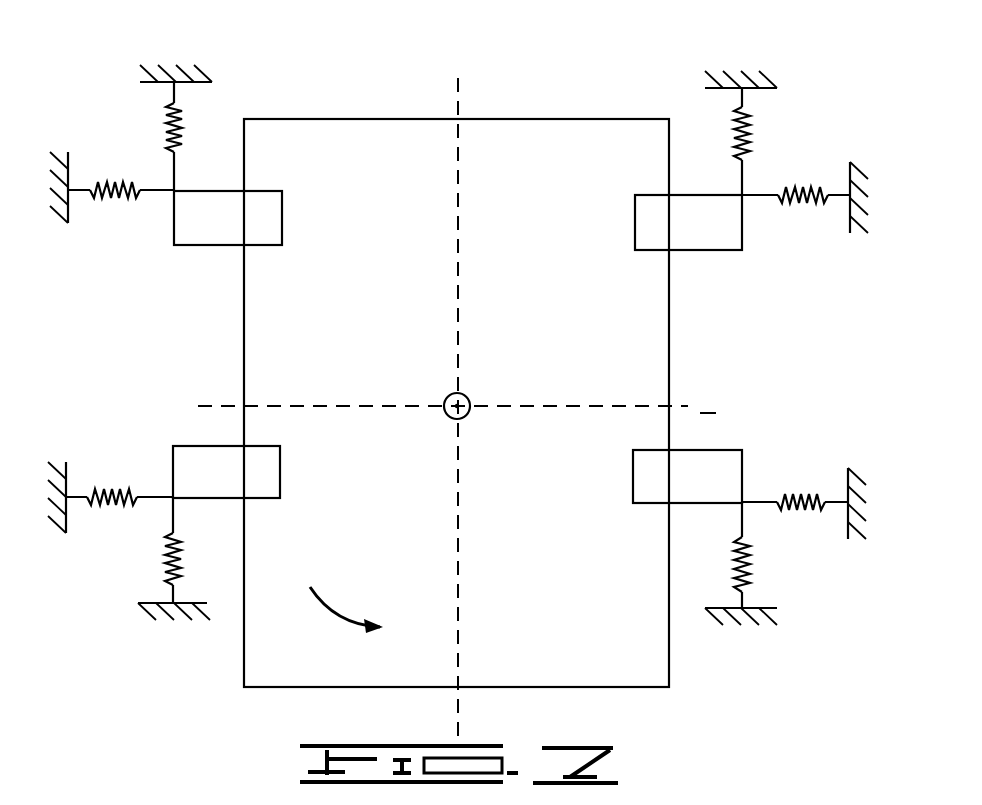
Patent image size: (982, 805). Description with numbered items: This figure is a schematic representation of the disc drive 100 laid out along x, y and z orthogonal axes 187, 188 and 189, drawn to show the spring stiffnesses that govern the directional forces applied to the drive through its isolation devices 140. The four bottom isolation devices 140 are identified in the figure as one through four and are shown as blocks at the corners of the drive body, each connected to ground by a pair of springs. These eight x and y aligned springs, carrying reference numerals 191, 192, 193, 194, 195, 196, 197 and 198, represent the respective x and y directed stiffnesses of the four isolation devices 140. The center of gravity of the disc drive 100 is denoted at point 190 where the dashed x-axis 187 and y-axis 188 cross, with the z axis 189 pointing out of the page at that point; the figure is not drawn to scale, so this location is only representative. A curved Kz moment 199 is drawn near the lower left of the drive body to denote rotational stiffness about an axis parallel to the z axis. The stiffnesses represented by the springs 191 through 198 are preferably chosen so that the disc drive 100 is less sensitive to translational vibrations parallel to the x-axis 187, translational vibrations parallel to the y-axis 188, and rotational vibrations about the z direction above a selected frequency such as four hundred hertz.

The disc drive 100 is at (283, 72).
The isolation devices 140 is at (282, 217).
The x-axis 187 is at (688, 406).
The y-axis 188 is at (458, 97).
The z axis 189 is at (448, 390).
The center of gravity 190 is at (447, 420).
The spring K1 191 is at (100, 193).
The spring K2 192 is at (818, 200).
The spring K3 193 is at (818, 500).
The spring K4 194 is at (98, 493).
The spring K5 195 is at (172, 113).
The spring K6 196 is at (750, 122).
The spring K7 197 is at (747, 573).
The spring K8 198 is at (167, 573).
The Kz moment 199 is at (337, 603).